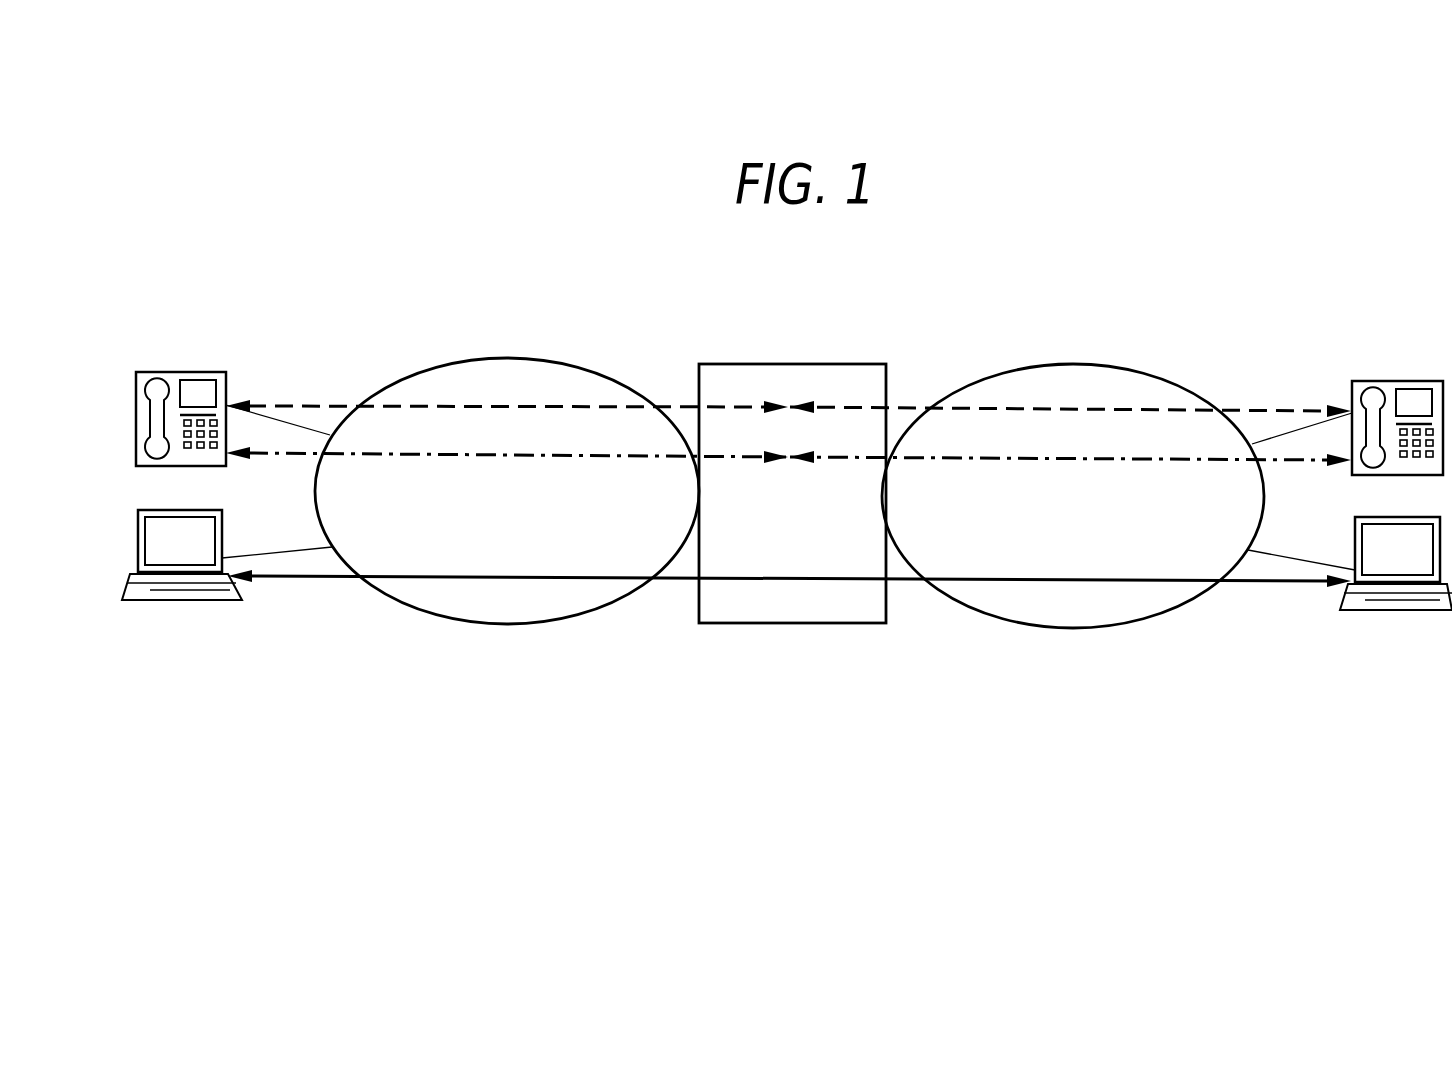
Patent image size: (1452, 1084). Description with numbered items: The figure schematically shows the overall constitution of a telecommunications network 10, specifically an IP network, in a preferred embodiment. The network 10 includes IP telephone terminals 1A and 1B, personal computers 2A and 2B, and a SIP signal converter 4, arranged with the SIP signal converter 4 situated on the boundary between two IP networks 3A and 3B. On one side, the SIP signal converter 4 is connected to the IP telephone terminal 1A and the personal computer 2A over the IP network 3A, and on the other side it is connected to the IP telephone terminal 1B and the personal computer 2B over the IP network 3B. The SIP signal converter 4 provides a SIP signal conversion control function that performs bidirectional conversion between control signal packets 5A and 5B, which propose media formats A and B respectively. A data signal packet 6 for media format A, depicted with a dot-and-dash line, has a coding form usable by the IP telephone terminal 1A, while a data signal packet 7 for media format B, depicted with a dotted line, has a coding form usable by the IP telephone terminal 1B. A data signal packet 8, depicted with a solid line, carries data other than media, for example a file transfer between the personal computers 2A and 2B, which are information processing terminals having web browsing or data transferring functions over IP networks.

The telecommunications network 10 is at (793, 842).
The IP telephone terminal 1A is at (183, 372).
The IP telephone terminal 1B is at (1398, 381).
The personal computer 2A is at (183, 602).
The personal computer 2B is at (1400, 612).
The IP network 3A is at (432, 368).
The IP network 3B is at (1008, 370).
The SIP signal converter 4 is at (793, 364).
The control signal packet 5A is at (553, 407).
The control signal packet 5B is at (1127, 409).
The data signal packet 6 is at (385, 455).
The data signal packet 7 is at (945, 460).
The data signal packet 8 is at (808, 580).